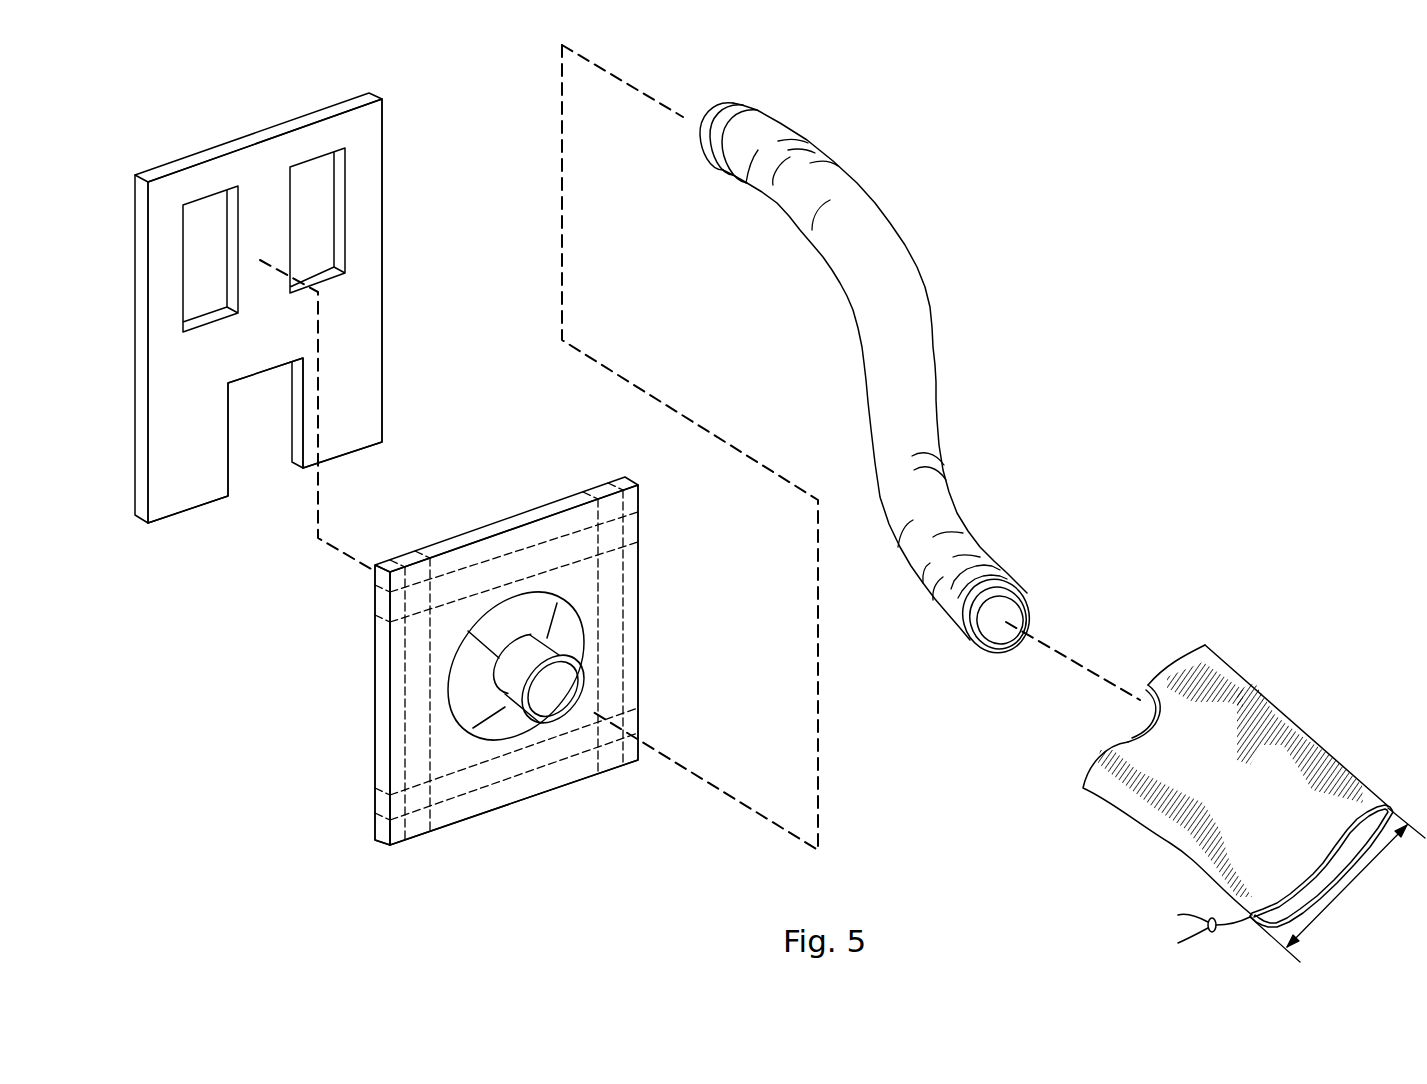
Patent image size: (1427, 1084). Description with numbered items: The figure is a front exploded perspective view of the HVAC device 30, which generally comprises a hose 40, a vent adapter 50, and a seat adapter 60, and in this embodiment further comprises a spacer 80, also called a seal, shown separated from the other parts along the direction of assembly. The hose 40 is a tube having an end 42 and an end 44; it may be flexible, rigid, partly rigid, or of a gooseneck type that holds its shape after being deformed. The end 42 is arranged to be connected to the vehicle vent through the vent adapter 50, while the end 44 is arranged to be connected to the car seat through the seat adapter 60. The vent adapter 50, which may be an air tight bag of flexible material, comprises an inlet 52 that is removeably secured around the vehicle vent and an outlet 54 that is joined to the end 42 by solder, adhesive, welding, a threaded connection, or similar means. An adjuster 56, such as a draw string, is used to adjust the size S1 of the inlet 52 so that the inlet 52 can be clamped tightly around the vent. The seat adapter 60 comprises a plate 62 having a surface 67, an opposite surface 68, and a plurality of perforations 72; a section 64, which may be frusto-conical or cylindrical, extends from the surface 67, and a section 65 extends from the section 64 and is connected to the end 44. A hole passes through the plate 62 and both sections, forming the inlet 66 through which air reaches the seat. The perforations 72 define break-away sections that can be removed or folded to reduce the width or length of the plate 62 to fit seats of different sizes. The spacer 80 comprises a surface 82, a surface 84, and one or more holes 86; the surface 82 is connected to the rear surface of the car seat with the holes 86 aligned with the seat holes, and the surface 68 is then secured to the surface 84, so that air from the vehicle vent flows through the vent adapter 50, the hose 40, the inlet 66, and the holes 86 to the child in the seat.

The HVAC device 30 is at (1195, 90).
The hose 40 is at (915, 345).
The end 42 is at (1028, 633).
The end 44 is at (712, 112).
The vent adapter 50 is at (1237, 705).
The inlet 52 is at (1360, 828).
The outlet 54 is at (1140, 700).
The adjuster 56 is at (1222, 915).
The seat adapter 60 is at (576, 515).
The plate 62 is at (582, 570).
The section 64 is at (565, 633).
The section 65 is at (513, 677).
The inlet 66 is at (552, 710).
The surface 67 is at (495, 550).
The surface 68 is at (375, 700).
The plurality of perforations 72 is at (556, 770).
The spacer 80 is at (353, 419).
The surface 82 is at (133, 474).
The surface 84 is at (360, 175).
The holes 86 is at (312, 230).
The size S1 is at (1343, 895).